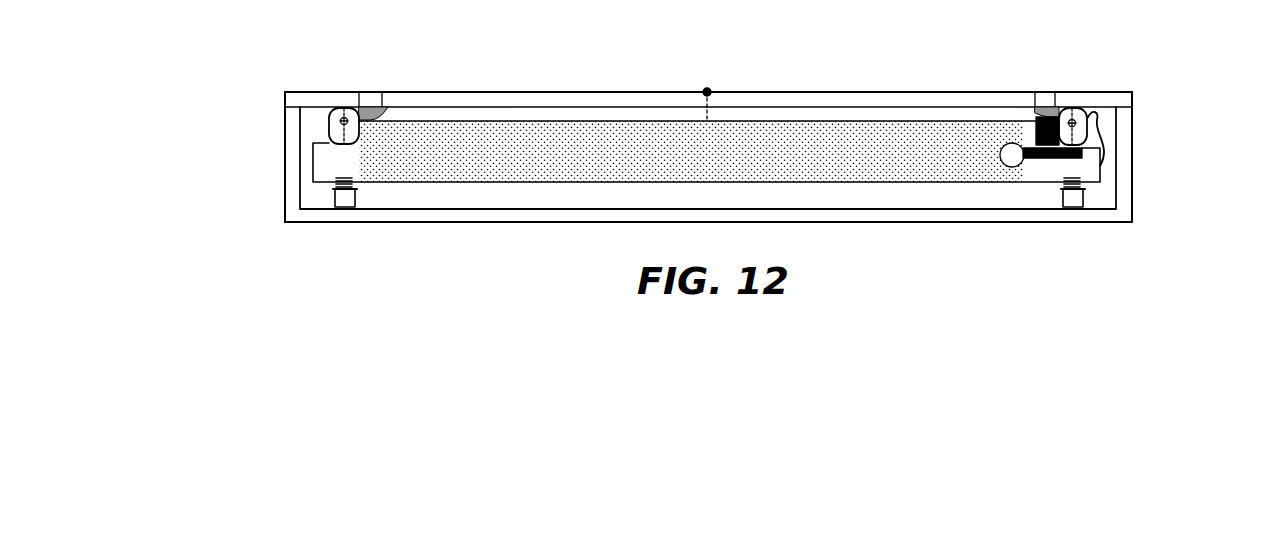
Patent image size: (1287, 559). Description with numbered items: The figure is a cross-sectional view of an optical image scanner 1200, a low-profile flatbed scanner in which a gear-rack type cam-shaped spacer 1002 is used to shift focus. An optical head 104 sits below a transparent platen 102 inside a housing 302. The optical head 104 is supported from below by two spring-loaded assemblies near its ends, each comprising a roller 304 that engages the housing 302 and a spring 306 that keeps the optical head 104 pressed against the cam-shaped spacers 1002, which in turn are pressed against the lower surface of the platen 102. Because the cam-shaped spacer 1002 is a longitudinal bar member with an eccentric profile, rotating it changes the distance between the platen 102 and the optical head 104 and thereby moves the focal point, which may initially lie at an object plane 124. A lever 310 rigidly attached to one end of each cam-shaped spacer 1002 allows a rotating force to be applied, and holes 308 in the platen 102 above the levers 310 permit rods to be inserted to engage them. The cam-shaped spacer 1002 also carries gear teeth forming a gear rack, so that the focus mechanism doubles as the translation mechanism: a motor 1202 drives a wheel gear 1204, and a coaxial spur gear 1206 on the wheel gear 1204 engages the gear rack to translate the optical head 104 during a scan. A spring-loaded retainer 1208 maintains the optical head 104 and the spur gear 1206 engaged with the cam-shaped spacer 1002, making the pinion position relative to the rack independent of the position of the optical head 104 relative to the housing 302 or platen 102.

The optical image scanner 1200 is at (205, 193).
The platen 102 is at (560, 92).
The housing 302 is at (969, 223).
The holes 308 is at (370, 92).
The lever 310 is at (380, 120).
The cam-shaped spacer 1002 is at (308, 121).
The optical head 104 is at (517, 178).
The object plane 124 is at (707, 88).
The roller 304 is at (342, 207).
The spring 306 is at (368, 196).
The motor 1202 is at (1000, 155).
The wheel gear 1204 is at (1027, 158).
The spur gear 1206 is at (1036, 138).
The spring-loaded retainer 1208 is at (1098, 132).